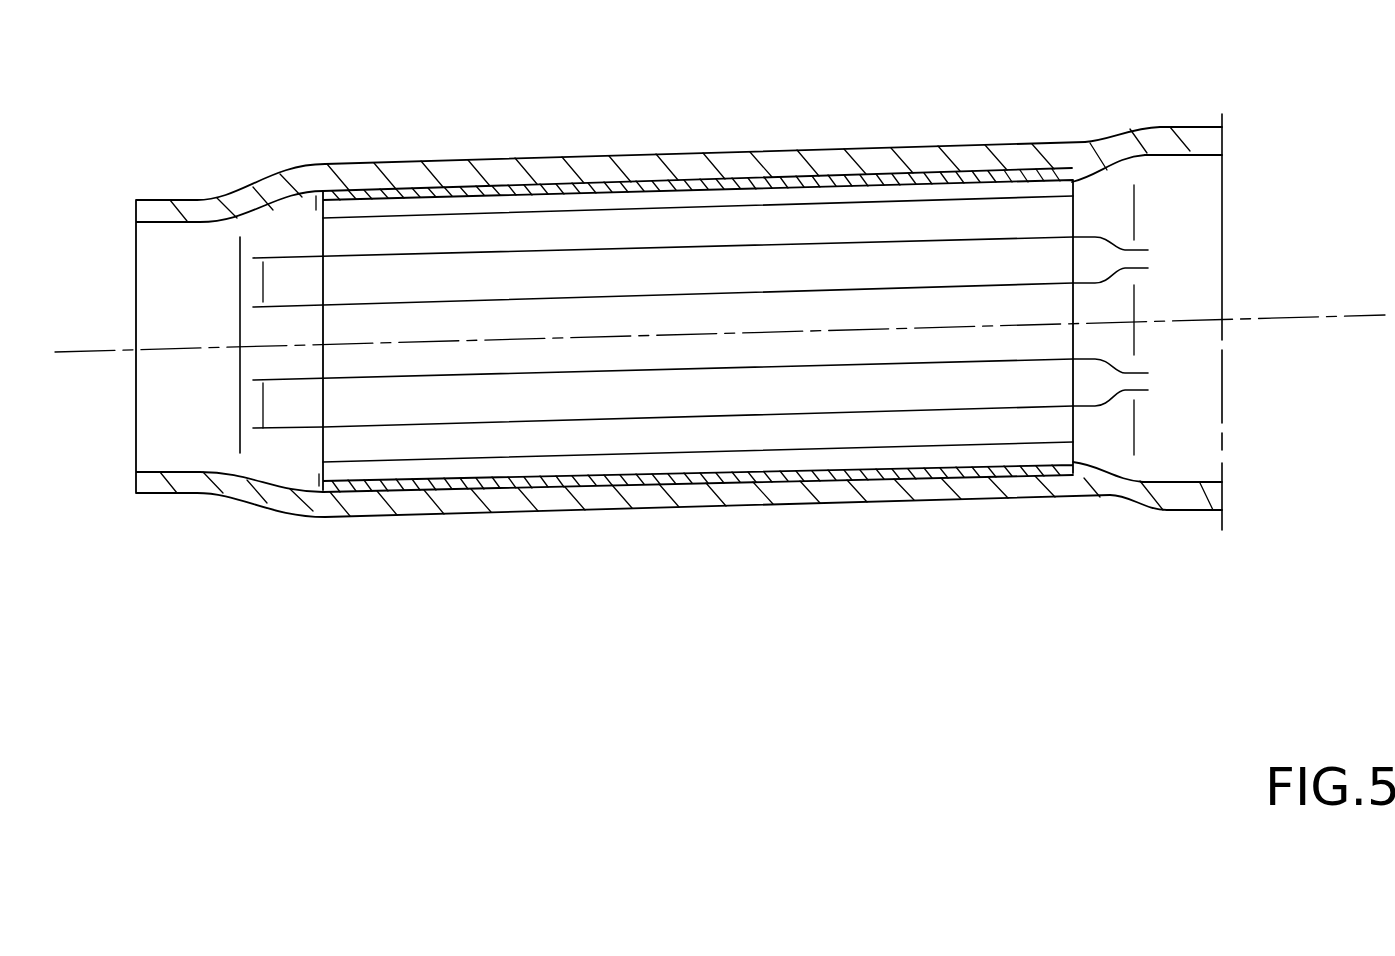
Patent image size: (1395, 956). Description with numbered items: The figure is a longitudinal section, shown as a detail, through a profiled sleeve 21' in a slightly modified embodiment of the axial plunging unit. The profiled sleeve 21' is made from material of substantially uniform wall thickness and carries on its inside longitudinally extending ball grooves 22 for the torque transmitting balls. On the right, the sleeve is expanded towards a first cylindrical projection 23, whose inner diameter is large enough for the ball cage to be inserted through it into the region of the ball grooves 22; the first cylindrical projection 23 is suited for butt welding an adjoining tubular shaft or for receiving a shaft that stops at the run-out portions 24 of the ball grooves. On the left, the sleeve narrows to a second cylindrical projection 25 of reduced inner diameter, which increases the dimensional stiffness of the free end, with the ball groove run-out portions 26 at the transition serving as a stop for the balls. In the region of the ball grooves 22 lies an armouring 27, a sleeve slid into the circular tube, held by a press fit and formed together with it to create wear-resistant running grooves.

The profiled sleeve 21' is at (716, 288).
The ball grooves 22 is at (667, 202).
The first cylindrical projection 23 is at (1175, 128).
The run-out portions of the ball grooves 24 is at (1083, 170).
The second cylindrical projection 25 is at (182, 210).
The ball groove run-out portions 26 is at (280, 210).
The armouring 27 is at (803, 175).